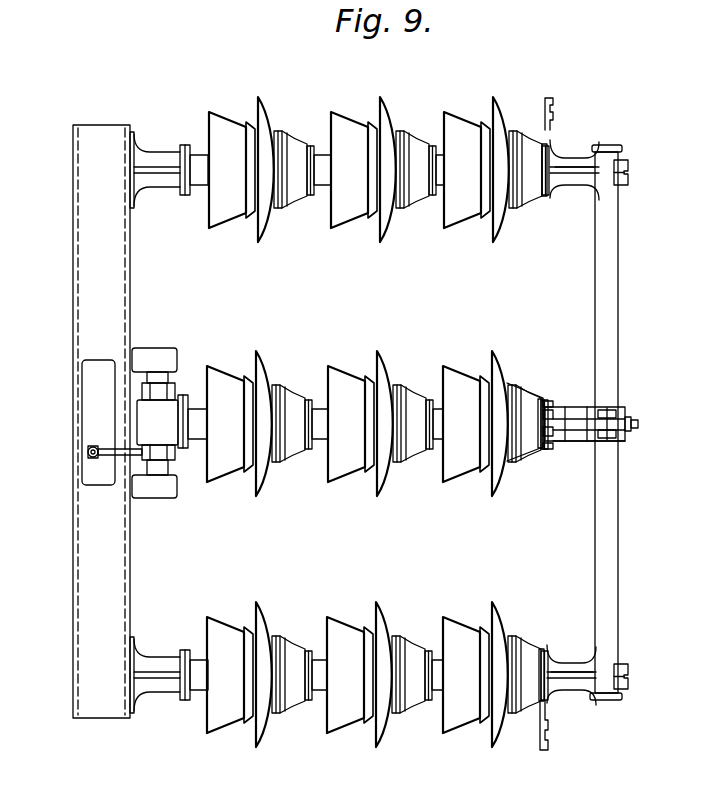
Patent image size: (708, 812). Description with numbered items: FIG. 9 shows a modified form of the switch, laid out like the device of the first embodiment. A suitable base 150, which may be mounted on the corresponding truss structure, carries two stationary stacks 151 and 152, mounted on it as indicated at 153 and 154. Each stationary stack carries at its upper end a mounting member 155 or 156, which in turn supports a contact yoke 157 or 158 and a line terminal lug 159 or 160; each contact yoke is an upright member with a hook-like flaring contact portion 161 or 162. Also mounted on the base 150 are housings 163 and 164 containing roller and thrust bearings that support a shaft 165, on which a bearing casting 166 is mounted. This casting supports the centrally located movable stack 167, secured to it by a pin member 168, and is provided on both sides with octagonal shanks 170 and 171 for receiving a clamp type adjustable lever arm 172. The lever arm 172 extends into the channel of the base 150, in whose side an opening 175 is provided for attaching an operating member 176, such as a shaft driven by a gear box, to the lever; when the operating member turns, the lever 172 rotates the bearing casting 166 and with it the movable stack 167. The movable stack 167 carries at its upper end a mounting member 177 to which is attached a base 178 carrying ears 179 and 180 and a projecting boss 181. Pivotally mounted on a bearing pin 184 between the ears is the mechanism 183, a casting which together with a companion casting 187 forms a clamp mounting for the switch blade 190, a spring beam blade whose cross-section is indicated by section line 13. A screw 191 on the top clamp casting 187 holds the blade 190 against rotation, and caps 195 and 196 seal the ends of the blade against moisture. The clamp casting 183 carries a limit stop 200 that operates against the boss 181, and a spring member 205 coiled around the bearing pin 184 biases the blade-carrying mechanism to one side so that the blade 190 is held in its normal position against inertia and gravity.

The base 150 is at (97, 130).
The stationary stack 151 is at (290, 140).
The stationary stack 152 is at (292, 722).
The stack mounting 153 is at (153, 152).
The stack mounting 154 is at (157, 690).
The mounting member 155 is at (547, 190).
The mounting member 156 is at (540, 650).
The contact yoke 157 is at (560, 184).
The contact yoke 158 is at (570, 688).
The line terminal lug 159 is at (548, 100).
The line terminal lug 160 is at (548, 741).
The contact portion 161 is at (630, 178).
The contact portion 162 is at (630, 668).
The housing 163 is at (146, 350).
The housing 164 is at (172, 492).
The shaft 165 is at (168, 372).
The bearing casting 166 is at (165, 432).
The movable stack 167 is at (383, 375).
The pin member 168 is at (198, 422).
The octagonal shank 170 is at (170, 384).
The octagonal shank 171 is at (160, 461).
The lever arm 172 is at (138, 456).
The opening 175 is at (88, 372).
The operating member 176 is at (88, 453).
The mounting member 177 is at (514, 394).
The base 178 is at (543, 404).
The ear 179 is at (550, 403).
The ear 180 is at (550, 448).
The boss 181 is at (546, 418).
The mechanism 183 is at (582, 409).
The bearing pin 184 is at (549, 451).
The companion casting 187 is at (626, 420).
The switch blade 190 is at (619, 268).
The screw 191 is at (639, 428).
The cap 195 is at (606, 146).
The cap 196 is at (622, 698).
The limit stop 200 is at (585, 431).
The spring member 205 is at (546, 436).
The section line 13- 13 is at (592, 558).